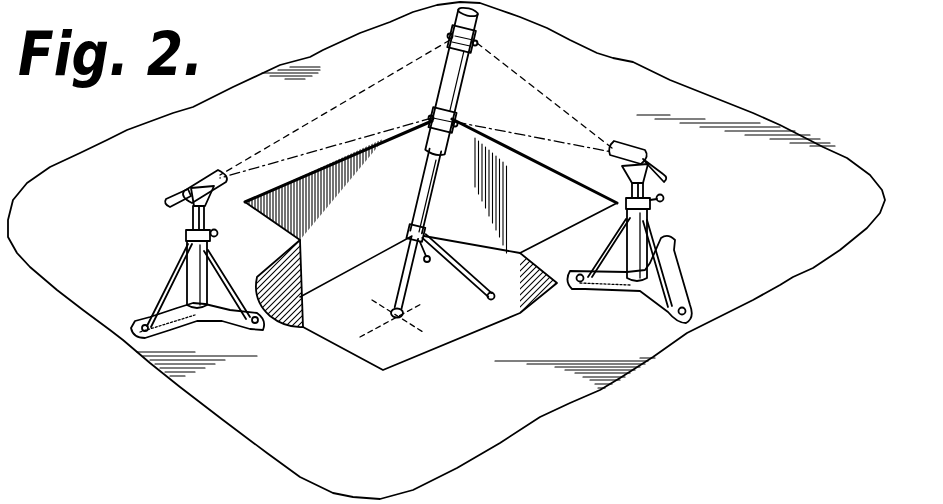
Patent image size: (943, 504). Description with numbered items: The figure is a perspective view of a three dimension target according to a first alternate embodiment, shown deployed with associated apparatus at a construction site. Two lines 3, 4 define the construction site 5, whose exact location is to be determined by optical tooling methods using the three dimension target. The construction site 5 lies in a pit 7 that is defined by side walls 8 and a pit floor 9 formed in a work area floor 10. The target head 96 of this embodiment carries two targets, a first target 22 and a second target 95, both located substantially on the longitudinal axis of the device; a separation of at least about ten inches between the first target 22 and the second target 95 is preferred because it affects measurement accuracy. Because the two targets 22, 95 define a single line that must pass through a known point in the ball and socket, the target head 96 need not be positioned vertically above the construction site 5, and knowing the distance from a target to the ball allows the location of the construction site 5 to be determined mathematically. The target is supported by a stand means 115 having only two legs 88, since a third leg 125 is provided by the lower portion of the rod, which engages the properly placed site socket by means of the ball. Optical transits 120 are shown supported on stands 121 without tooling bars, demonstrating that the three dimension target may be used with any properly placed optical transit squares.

The line 3 is at (407, 319).
The line 4 is at (377, 334).
The construction site 5 is at (404, 308).
The pit 7 is at (568, 191).
The side walls 8 is at (393, 152).
The pit floor 9 is at (333, 293).
The work area floor 10 is at (637, 76).
The first target 22 is at (437, 108).
The legs 88 is at (484, 285).
The second target 95 is at (481, 34).
The target head 96 is at (460, 104).
The stand means 115 is at (470, 226).
The optical transits 120 is at (204, 172).
The stands 121 is at (186, 240).
The third leg 125 is at (406, 283).